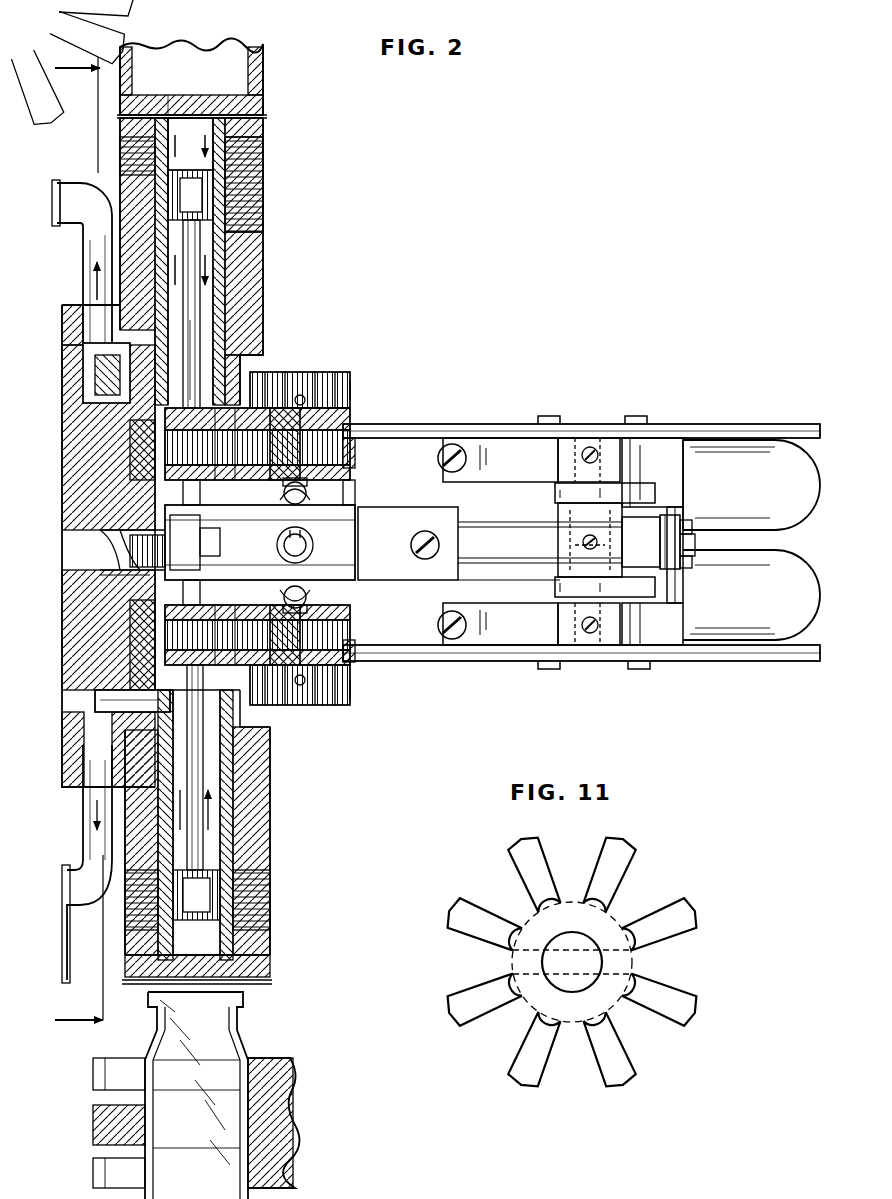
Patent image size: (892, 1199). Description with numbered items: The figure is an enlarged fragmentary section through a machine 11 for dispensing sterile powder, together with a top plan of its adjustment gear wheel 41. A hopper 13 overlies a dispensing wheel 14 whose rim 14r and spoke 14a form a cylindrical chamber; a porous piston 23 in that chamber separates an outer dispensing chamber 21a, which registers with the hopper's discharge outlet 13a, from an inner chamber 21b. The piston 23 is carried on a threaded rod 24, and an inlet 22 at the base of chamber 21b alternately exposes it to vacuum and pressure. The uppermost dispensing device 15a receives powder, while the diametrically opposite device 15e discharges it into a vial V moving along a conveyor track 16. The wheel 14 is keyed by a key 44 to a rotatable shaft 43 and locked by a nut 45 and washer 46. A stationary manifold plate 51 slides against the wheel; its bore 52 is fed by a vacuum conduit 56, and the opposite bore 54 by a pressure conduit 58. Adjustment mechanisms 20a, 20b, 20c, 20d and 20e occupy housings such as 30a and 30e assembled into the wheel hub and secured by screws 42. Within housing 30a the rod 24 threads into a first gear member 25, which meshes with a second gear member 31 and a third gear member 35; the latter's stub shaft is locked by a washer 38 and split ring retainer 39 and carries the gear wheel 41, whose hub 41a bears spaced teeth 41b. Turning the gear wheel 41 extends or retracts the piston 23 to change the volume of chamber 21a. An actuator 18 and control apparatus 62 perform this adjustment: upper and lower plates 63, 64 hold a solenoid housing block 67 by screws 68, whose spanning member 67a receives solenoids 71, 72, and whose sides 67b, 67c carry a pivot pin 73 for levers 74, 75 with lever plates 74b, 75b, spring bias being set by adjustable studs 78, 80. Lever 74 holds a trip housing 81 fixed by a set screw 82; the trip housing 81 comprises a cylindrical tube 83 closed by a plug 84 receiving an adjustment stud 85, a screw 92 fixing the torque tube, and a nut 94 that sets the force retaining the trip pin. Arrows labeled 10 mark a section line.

In FIG. 2, the section line 10 is at (79, 547).
In FIG. 2, the machine 11 is at (402, 208).
In FIG. 2, the hopper 13 is at (255, 52).
In FIG. 2, the discharge outlet 13a is at (175, 104).
In FIG. 2, the dispensing wheel 14 is at (265, 198).
In FIG. 2, the rim 14r is at (257, 115).
In FIG. 2, the spoke 14a is at (248, 158).
In FIG. 2, the dispensing device 15a is at (230, 245).
In FIG. 2, the dispensing device 15e is at (242, 868).
In FIG. 2, the conveyor track 16 is at (297, 1108).
In FIG. 2, the actuator 18 is at (645, 392).
In FIG. 2, the adjustment mechanism 20a is at (312, 368).
In FIG. 2, the adjustment mechanism 20b is at (350, 488).
In FIG. 2, the adjustment mechanism 20c is at (355, 575).
In FIG. 2, the adjustment mechanism 20d is at (330, 588).
In FIG. 2, the adjustment mechanism 20e is at (318, 712).
In FIG. 2, the dispensing chamber 21a is at (192, 128).
In FIG. 2, the inner chamber 21b is at (208, 290).
In FIG. 2, the inlet 22 is at (148, 440).
In FIG. 2, the piston 23 is at (205, 205).
In FIG. 2, the rod 24 is at (193, 322).
In FIG. 2, the first gear member 25 is at (170, 455).
In FIG. 2, the housing 30a is at (352, 425).
In FIG. 2, the housing 30e is at (352, 665).
In FIG. 2, the second gear member 31 is at (245, 450).
In FIG. 2, the third gear member 35 is at (285, 455).
In FIG. 2, the washer 38 is at (320, 523).
In FIG. 2, the split ring retainer 39 is at (318, 548).
In FIG. 2, the gear wheel 41 is at (352, 380).
In FIG. 11, the gear wheel 41 is at (346, 402).
In FIG. 2, the hub 41a is at (285, 400).
In FIG. 11, the hub 41a is at (610, 962).
In FIG. 2, the teeth 41b is at (352, 378).
In FIG. 11, the teeth 41b is at (500, 838).
In FIG. 2, the screws 42 is at (355, 448).
In FIG. 2, the rotatable shaft 43 is at (90, 575).
In FIG. 2, the key 44 is at (132, 545).
In FIG. 2, the nut 45 is at (222, 560).
In FIG. 2, the washer 46 is at (150, 575).
In FIG. 2, the manifold plate 51 is at (80, 325).
In FIG. 2, the transverse bore 52 is at (102, 415).
In FIG. 2, the transverse bore 54 is at (120, 700).
In FIG. 2, the first conduit 56 is at (80, 188).
In FIG. 2, the conduit 58 is at (95, 808).
In FIG. 2, the control apparatus 62 is at (698, 420).
In FIG. 2, the upper plate 63 is at (748, 428).
In FIG. 2, the lower plate 64 is at (722, 662).
In FIG. 2, the solenoid housing block 67 is at (650, 460).
In FIG. 2, the spanning member 67a is at (683, 490).
In FIG. 2, the side 67b is at (485, 440).
In FIG. 2, the side 67c is at (515, 650).
In FIG. 2, the screws 68 is at (548, 414).
In FIG. 2, the solenoid 71 is at (770, 445).
In FIG. 2, the solenoid 72 is at (788, 630).
In FIG. 2, the pivot pin 73 is at (605, 428).
In FIG. 2, the pivot lever 74 is at (560, 540).
In FIG. 2, the lever plate 74b is at (530, 590).
In FIG. 2, the pivot lever 75 is at (665, 578).
In FIG. 2, the lever plate 75b is at (513, 498).
In FIG. 2, the adjustable stud 78 is at (455, 445).
In FIG. 2, the adjustable stud 80 is at (462, 640).
In FIG. 2, the trip housing 81 is at (497, 570).
In FIG. 2, the set screw 82 is at (609, 540).
In FIG. 2, the cylindrical tube 83 is at (482, 522).
In FIG. 2, the cylindrical plug 84 is at (672, 518).
In FIG. 2, the adjustment stud 85 is at (698, 550).
In FIG. 2, the screw 92 is at (445, 549).
In FIG. 2, the nut 94 is at (698, 520).
In FIG. 2, the pharmaceutical vial V is at (250, 1052).